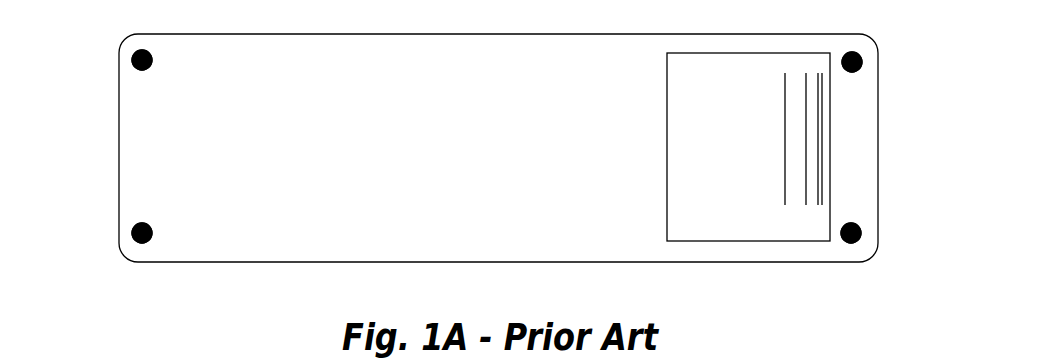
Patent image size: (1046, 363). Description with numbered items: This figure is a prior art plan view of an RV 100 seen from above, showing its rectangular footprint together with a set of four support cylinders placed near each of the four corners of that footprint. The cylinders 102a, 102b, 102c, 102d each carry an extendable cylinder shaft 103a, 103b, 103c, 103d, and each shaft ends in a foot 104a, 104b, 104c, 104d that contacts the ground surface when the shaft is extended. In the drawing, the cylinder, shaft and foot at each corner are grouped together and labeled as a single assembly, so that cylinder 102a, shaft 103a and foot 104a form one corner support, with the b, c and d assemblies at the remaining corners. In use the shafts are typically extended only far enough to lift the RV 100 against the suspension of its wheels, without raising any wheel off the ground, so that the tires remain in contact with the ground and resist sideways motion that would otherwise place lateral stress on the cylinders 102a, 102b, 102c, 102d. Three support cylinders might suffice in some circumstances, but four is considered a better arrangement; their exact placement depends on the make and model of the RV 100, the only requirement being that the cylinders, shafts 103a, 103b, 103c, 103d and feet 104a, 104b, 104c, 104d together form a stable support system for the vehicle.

The RV 100 is at (727, 262).
The cylinder 102a is at (908, 317).
The cylinder shaft 103a is at (899, 255).
The foot 104a is at (897, 266).
The cylinder 102b is at (138, 243).
The cylinder shaft 103b is at (96, 253).
The foot 104b is at (98, 263).
The cylinder 102c is at (905, 141).
The cylinder shaft 103c is at (897, 83).
The foot 104c is at (895, 93).
The cylinder 102d is at (137, 73).
The cylinder shaft 103d is at (96, 81).
The foot 104d is at (98, 91).